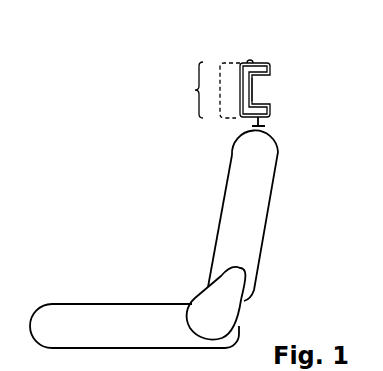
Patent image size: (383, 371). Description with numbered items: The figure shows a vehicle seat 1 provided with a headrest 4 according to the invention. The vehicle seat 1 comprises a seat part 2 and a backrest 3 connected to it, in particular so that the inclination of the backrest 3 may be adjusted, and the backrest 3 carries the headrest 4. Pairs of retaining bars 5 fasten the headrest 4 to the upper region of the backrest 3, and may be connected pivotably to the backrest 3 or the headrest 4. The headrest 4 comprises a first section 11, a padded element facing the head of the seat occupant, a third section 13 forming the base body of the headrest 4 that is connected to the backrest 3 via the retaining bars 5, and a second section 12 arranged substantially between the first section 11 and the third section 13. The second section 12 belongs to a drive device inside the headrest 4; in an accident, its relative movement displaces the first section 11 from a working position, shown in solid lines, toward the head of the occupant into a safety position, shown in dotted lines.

The vehicle seat 1 is at (158, 171).
The seat part 2 is at (94, 322).
The backrest 3 is at (255, 190).
The headrest 4 is at (210, 90).
The retaining bars 5 is at (262, 123).
The first section 11 is at (250, 62).
The second section 12 is at (255, 86).
The third section 13 is at (271, 102).